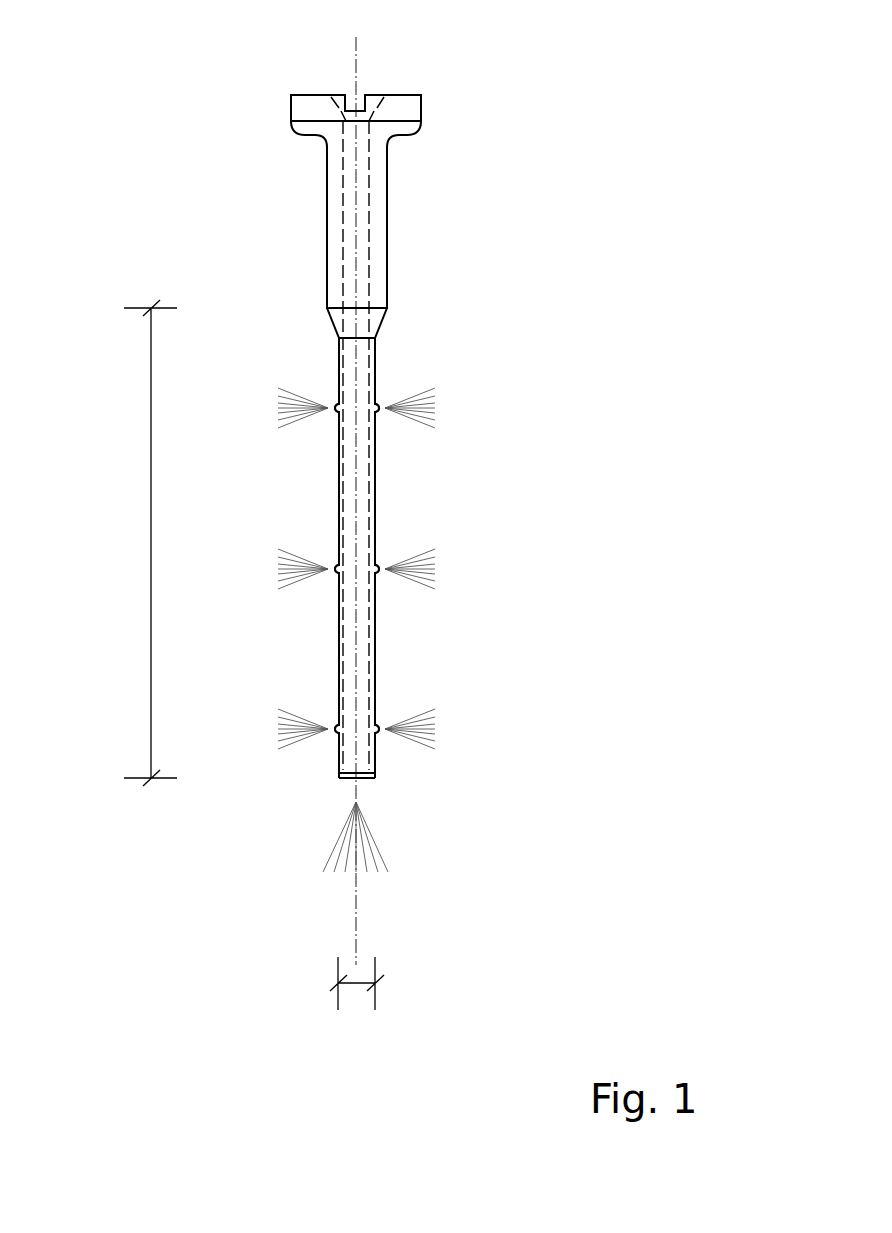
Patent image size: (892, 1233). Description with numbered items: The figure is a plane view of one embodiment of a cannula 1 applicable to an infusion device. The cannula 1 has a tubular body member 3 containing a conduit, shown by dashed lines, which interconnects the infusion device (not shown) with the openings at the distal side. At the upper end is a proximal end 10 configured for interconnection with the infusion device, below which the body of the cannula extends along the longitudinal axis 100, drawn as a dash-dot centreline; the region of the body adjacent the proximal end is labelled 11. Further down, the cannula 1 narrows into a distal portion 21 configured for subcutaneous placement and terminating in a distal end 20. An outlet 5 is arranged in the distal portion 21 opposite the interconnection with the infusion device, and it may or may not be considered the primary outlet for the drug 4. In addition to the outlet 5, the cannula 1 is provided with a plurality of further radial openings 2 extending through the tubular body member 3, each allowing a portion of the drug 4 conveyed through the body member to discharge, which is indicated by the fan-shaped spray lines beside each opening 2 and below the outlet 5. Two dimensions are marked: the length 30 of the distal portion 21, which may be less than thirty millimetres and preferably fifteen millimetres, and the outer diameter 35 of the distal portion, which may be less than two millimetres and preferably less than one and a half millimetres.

The longitudinal axis 100 is at (356, 62).
The proximal end 10 is at (423, 105).
The cannula 1 is at (330, 183).
The shank portion 11 is at (470, 200).
The tubular body member 3 is at (350, 355).
The radial opening 2 is at (375, 408).
The drug 4 is at (420, 570).
The distal portion 21 is at (497, 661).
The distal end 20 is at (376, 770).
The outlet 5 is at (352, 782).
The length 30 is at (150, 570).
The outer diameter 35 is at (357, 985).